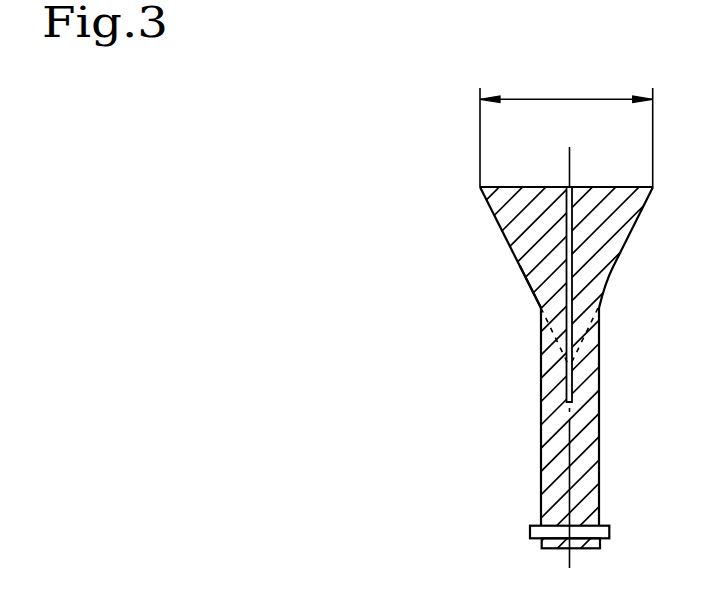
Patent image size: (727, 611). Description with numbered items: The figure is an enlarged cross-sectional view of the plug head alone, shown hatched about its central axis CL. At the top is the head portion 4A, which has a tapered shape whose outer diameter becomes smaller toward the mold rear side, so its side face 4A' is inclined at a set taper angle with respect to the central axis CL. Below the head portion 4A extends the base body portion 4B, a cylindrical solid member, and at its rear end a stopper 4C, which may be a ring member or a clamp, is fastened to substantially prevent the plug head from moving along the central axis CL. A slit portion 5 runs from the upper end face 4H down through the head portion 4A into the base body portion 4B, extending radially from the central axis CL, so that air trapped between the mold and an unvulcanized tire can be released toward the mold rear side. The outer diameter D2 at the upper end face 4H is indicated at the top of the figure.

The upper end face 4H is at (520, 187).
The head portion 4A is at (531, 247).
The side face 4A' is at (485, 284).
The slit portion 5 is at (577, 187).
The base body portion 4B is at (548, 470).
The stopper 4C is at (609, 532).
The central axis CL is at (572, 338).
The outer diameter D2 is at (566, 124).